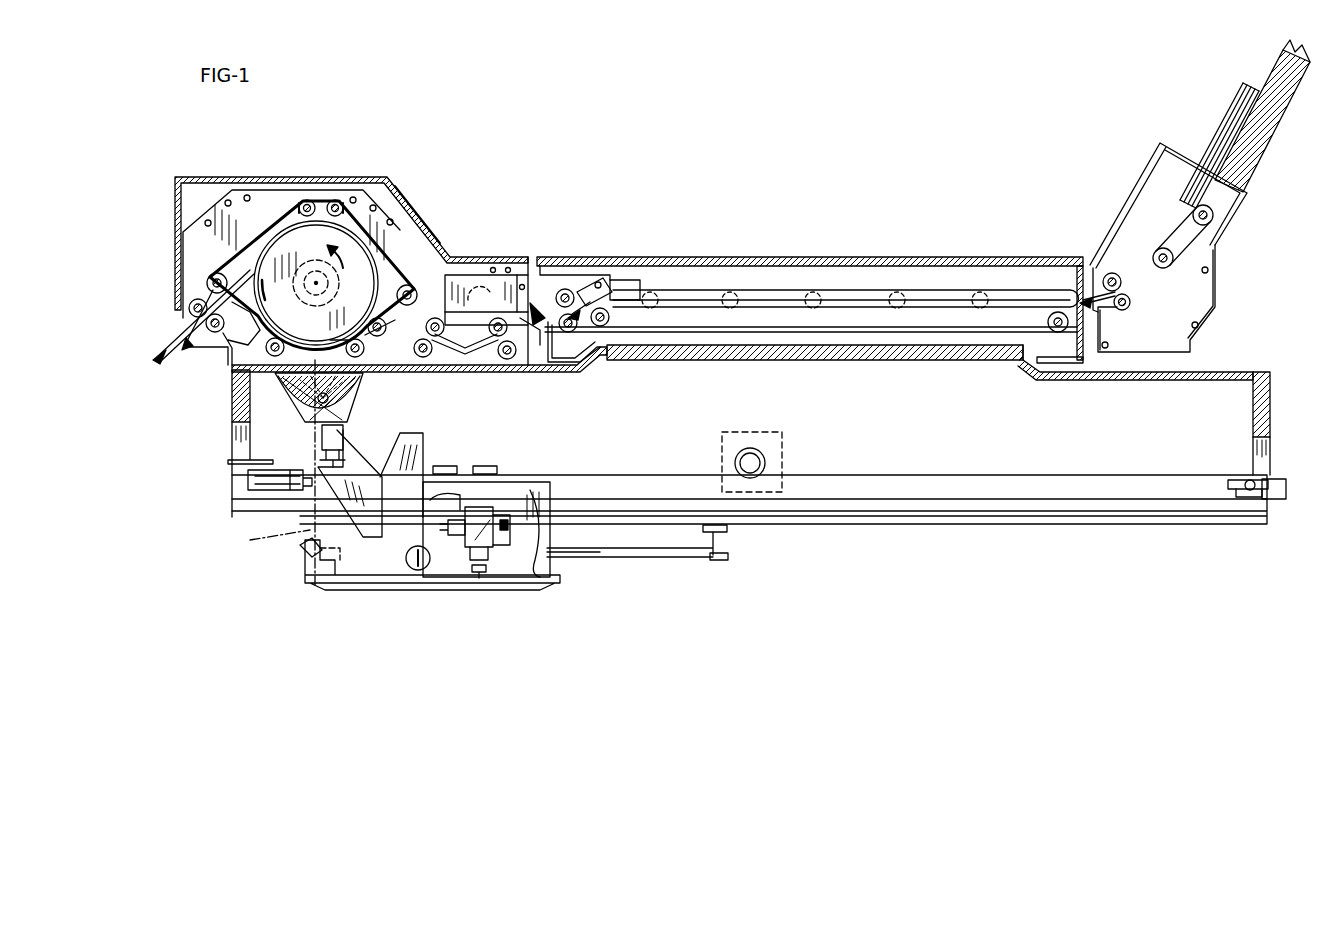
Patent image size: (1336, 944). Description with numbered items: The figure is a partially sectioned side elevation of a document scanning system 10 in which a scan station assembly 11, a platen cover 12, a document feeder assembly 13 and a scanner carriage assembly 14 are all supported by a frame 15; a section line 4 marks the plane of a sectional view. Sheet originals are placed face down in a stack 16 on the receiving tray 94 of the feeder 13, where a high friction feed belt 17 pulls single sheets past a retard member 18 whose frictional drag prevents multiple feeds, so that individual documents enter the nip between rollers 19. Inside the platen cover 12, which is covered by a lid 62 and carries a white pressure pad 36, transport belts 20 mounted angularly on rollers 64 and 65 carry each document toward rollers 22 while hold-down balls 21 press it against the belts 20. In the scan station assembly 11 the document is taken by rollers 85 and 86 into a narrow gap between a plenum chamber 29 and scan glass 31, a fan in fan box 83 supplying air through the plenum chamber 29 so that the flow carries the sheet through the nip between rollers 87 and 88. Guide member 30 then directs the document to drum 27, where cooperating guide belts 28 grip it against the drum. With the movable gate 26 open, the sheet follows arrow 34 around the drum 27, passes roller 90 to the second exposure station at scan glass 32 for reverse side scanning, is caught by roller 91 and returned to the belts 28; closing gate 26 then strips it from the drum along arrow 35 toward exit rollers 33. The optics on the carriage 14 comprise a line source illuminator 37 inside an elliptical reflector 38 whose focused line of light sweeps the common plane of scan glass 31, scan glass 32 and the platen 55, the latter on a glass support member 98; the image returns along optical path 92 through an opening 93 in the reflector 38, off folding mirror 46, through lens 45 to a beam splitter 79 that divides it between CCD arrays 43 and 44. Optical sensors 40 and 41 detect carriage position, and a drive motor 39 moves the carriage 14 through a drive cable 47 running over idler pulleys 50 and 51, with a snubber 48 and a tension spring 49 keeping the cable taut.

The section line 4- 4 is at (732, 197).
The document scanning system 10 is at (852, 174).
The scan station assembly 11 is at (430, 216).
The platen cover 12 is at (876, 247).
The document feeder assembly 13 is at (1137, 156).
The scanner carriage assembly 14 is at (325, 604).
The frame 15 is at (1268, 378).
The stack 16 is at (1232, 100).
The high friction feed belt 17 is at (1220, 250).
The retard member 18 is at (1160, 190).
The rollers 19 is at (1100, 270).
The belts 20 is at (940, 328).
The hold-down balls 21 is at (893, 292).
The rollers 22 is at (562, 288).
The movable gate 26 is at (212, 274).
The drum 27 is at (407, 230).
The guide belts 28 is at (345, 185).
The plenum chamber 29 is at (500, 362).
The guide member 30 is at (378, 337).
The scan glass 31 is at (470, 358).
The scan glass 32 is at (337, 345).
The exit rollers 33 is at (183, 318).
The arrow 34 is at (263, 295).
The arrow 35 is at (288, 268).
The pressure pad 36 is at (1000, 362).
The line source illuminator 37 is at (302, 395).
The reflector 38 is at (232, 398).
The drive motor 39 is at (768, 460).
The optical sensor 40 is at (698, 540).
The optical sensor 41 is at (600, 540).
The CCD array 43 is at (505, 488).
The CCD array 44 is at (542, 580).
The lens 45 is at (412, 570).
The folding mirror 46 is at (300, 548).
The drive cable 47 is at (1140, 476).
The snubber 48 is at (1230, 486).
The tension spring 49 is at (1270, 496).
The idler pulley 50 is at (485, 465).
The idler pulley 51 is at (445, 465).
The platen 55 is at (908, 362).
The lid 62 is at (674, 255).
The roller 64 is at (612, 295).
The roller 65 is at (1050, 312).
The beam splitter 79 is at (480, 580).
The fan box 83 is at (462, 280).
The roller 85 is at (500, 297).
The roller 86 is at (512, 360).
The roller 87 is at (420, 303).
The roller 88 is at (418, 358).
The roller 90 is at (265, 346).
The roller 91 is at (360, 358).
The optical path 92 is at (268, 472).
The opening 93 is at (318, 428).
The receiving tray 94 is at (1290, 122).
The glass support member 98 is at (585, 372).